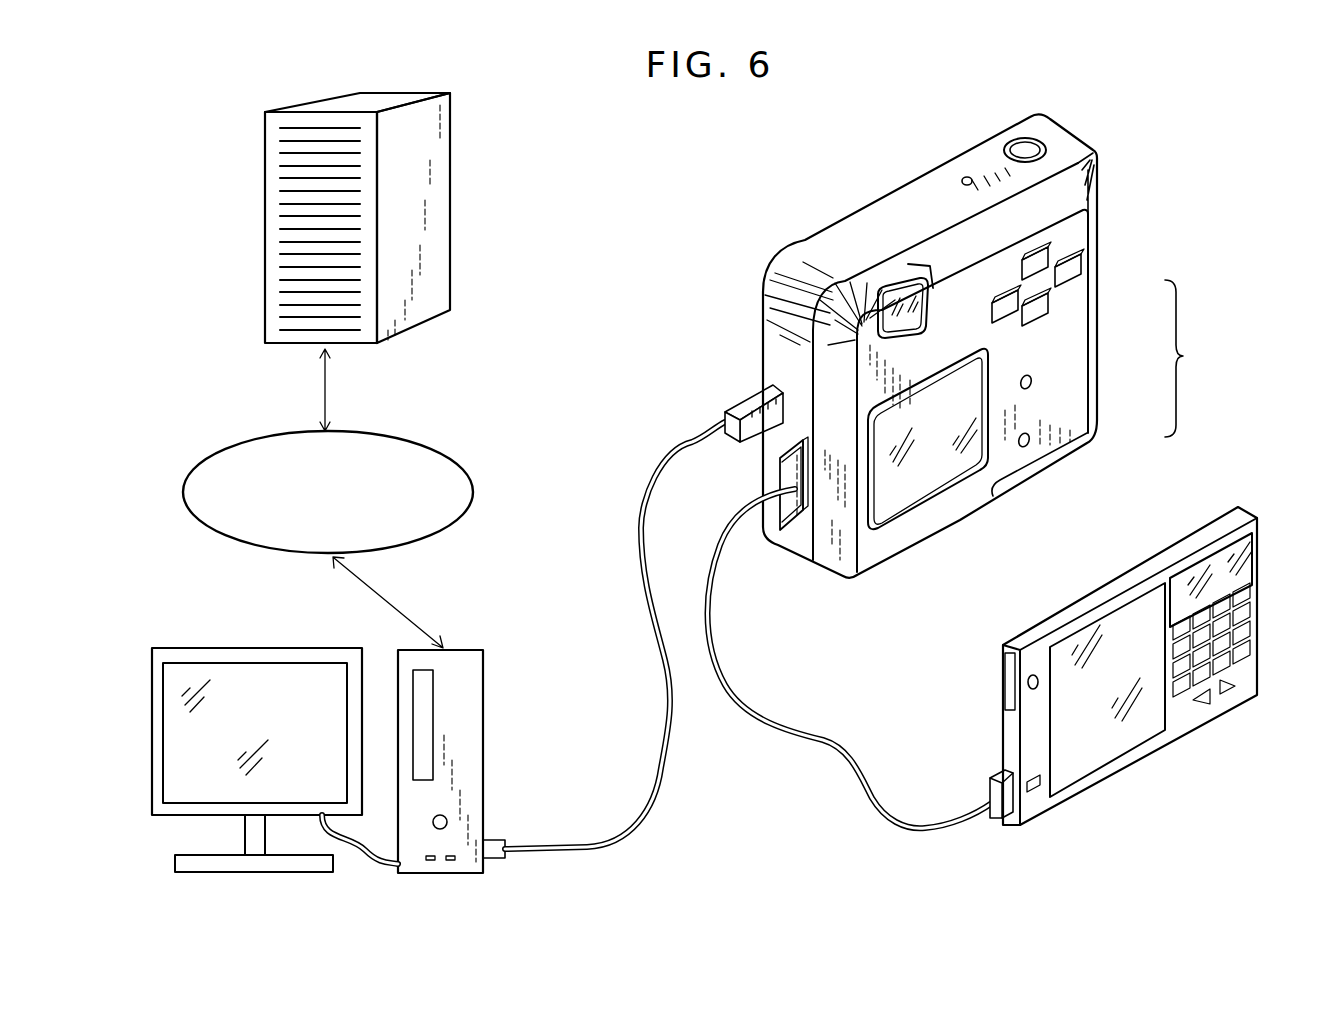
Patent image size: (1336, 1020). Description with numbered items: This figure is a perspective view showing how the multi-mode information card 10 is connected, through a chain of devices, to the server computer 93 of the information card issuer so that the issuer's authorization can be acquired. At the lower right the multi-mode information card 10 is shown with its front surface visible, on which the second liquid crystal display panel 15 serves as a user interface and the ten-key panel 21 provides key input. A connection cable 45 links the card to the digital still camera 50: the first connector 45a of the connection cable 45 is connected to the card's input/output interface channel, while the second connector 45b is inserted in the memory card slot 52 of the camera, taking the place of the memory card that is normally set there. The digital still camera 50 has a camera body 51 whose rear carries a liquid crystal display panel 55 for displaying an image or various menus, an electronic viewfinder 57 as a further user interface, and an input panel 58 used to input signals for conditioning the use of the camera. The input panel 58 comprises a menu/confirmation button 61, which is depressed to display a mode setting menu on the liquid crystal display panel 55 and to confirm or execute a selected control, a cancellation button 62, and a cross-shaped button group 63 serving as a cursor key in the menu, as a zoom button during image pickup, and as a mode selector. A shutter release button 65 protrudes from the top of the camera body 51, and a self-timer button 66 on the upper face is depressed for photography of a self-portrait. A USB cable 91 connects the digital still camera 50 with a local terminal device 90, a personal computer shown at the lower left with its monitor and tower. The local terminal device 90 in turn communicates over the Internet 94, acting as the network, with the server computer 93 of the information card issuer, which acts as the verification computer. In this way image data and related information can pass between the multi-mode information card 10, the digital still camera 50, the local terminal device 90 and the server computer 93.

The multi-mode information card 10 is at (1163, 679).
The second liquid crystal display panel 15 is at (1240, 550).
The ten-key panel 21 is at (1230, 640).
The connection cable 45 is at (872, 669).
The first connector 45a is at (997, 822).
The second connector 45b is at (790, 540).
The digital still camera 50 is at (956, 337).
The camera body 51 is at (780, 335).
The memory card slot 52 is at (810, 510).
The liquid crystal display panel 55 is at (934, 476).
The electronic viewfinder 57 is at (904, 292).
The input panel 58 is at (1106, 345).
The menu/confirmation button 61 is at (1033, 380).
The cancellation button 62 is at (1031, 438).
The cross-shaped button group 63 is at (1040, 308).
The shutter release button 65 is at (1024, 142).
The self-timer button 66 is at (968, 177).
The local terminal device 90 is at (470, 724).
The USB cable 91 is at (645, 527).
The server computer 93 is at (445, 218).
The Internet 94 is at (413, 440).